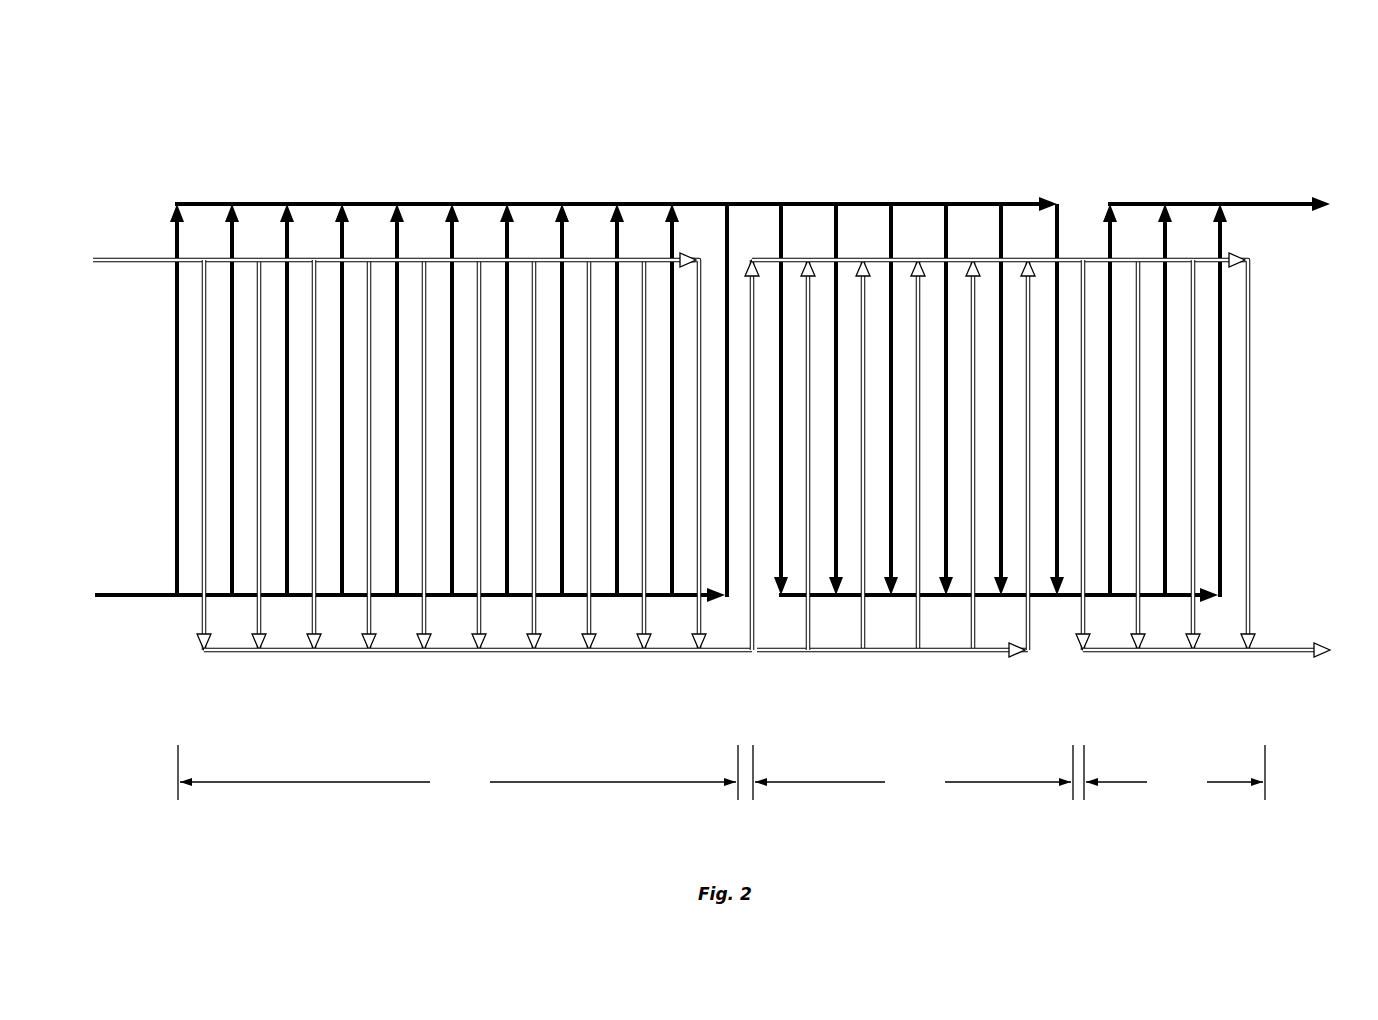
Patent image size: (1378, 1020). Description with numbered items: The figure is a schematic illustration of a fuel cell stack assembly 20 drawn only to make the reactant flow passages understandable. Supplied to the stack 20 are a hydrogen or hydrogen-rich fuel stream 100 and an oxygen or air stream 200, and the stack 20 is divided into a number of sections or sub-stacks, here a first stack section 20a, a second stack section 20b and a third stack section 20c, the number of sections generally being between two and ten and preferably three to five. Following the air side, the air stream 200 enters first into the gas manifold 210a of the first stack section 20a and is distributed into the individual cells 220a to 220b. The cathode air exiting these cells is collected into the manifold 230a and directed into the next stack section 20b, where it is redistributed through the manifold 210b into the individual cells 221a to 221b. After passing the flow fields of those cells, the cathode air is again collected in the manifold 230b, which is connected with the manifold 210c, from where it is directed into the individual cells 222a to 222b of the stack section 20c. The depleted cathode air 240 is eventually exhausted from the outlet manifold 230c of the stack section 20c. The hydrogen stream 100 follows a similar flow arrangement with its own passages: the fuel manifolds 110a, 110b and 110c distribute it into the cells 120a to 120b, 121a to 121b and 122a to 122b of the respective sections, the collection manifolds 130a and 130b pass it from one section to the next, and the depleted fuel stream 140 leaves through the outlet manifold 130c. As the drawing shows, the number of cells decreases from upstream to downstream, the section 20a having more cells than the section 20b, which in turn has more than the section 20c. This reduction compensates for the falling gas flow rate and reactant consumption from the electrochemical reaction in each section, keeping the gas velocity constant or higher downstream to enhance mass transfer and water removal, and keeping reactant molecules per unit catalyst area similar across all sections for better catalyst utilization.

The fuel cell stack assembly 20 is at (712, 408).
The first stack section 20a is at (458, 772).
The second stack section 20b is at (913, 772).
The third stack section 20c is at (1174, 772).
The hydrogen or hydrogen-rich fuel stream 100 is at (112, 233).
The fuel manifold of first stack section 110a is at (436, 212).
The fuel manifold of second stack section 110b is at (888, 671).
The fuel manifold of third stack section 110c is at (1161, 195).
The first cell of first stack section (fuel side) 120a is at (145, 455).
The last cell of first stack section (fuel side) 120b is at (602, 396).
The first cell of second stack section (fuel side) 121a is at (695, 479).
The last cell of second stack section (fuel side) 121b is at (983, 473).
The first cell of third stack section (fuel side) 122a is at (1035, 493).
The last cell of third stack section (fuel side) 122b is at (1292, 451).
The fuel collection manifold of first stack section 130a is at (478, 673).
The fuel collection manifold of second stack section 130b is at (917, 214).
The fuel outlet manifold of third stack section 130c is at (1196, 677).
The depleted fuel stream 140 is at (1309, 629).
The oxygen or air stream 200 is at (389, 619).
The gas manifold of first stack section 210a is at (259, 478).
The gas manifold of second stack section 210b is at (856, 395).
The gas manifold of third stack section 210c is at (1150, 478).
The first cell of first stack section 220a is at (125, 399).
The last cell of first stack section 220b is at (681, 372).
The first cell of second stack section 221a is at (736, 359).
The last cell of second stack section 221b is at (1013, 363).
The first cell of third stack section 222a is at (1057, 345).
The last cell of third stack section 222b is at (1280, 400).
The collection manifold of first stack section 230a is at (616, 188).
The collection manifold of second stack section 230b is at (998, 662).
The outlet manifold of third stack section 230c is at (1190, 184).
The depleted cathode air 240 is at (1298, 181).